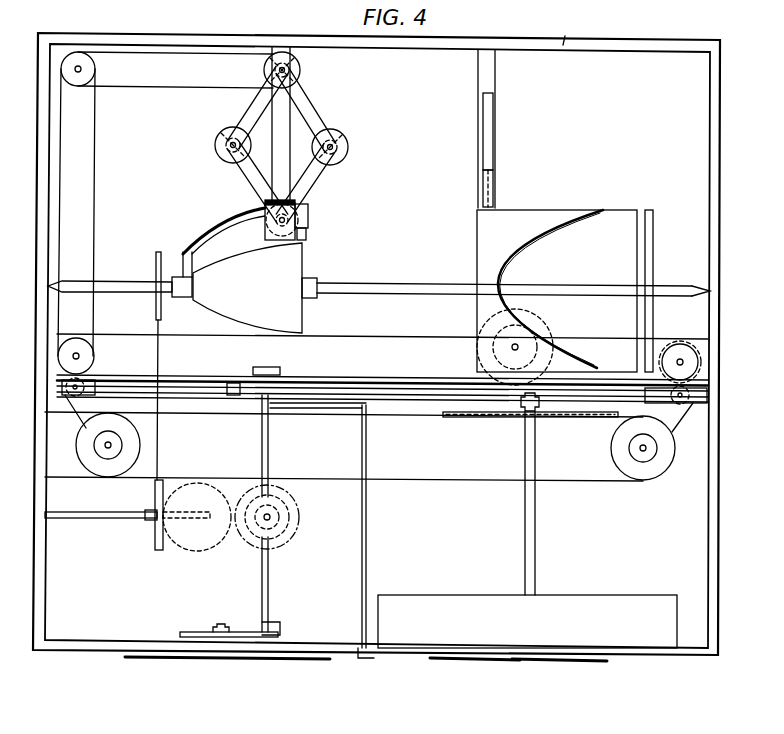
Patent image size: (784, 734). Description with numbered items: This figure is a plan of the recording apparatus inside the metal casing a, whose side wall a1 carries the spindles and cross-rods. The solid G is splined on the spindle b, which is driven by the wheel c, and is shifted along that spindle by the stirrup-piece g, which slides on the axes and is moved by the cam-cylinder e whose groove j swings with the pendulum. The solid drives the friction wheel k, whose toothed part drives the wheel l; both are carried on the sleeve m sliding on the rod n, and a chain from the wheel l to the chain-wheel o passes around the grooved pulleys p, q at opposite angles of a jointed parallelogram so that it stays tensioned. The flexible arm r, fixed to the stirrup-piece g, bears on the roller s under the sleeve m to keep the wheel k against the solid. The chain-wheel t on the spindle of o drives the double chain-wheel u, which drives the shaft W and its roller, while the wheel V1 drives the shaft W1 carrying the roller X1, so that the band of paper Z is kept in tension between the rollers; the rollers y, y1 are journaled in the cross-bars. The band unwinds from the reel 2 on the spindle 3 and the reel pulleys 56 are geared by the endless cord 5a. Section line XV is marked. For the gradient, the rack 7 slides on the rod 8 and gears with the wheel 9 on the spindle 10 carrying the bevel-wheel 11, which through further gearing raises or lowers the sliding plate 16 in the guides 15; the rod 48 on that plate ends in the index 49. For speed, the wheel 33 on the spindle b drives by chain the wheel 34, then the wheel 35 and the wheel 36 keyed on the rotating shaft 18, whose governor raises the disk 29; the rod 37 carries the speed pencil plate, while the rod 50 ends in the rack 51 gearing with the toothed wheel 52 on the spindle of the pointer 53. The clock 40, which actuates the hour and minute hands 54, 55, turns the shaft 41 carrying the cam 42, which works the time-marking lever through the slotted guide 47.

The metal casing a is at (44, 186).
The frame side a1 is at (559, 30).
The double chain-wheel u is at (96, 69).
The chain-wheel o is at (296, 68).
The chain-wheel t is at (298, 76).
The rod n is at (290, 148).
The grooved pulley q is at (216, 145).
The grooved pulley p is at (348, 147).
The sleeve m is at (268, 203).
The friction wheel k is at (308, 212).
The roller s is at (306, 236).
The flexible arm r is at (213, 241).
The wheel 33 is at (157, 355).
The toothed wheel l is at (262, 244).
The stirrup-piece g is at (182, 296).
The spindle b is at (398, 283).
The rod or way 8 is at (489, 82).
The rack 7 is at (497, 150).
The cam-cylinder e is at (557, 291).
The groove j is at (540, 234).
The wheel c is at (653, 228).
The spindle 10 is at (515, 347).
The bevel-wheel 11 is at (538, 326).
The wheel 9 is at (492, 352).
The section line XV is at (86, 328).
The roller X1 is at (705, 318).
The shaft W is at (94, 356).
The shaft W1 is at (699, 362).
The wheel V1 is at (693, 344).
The band of paper Z is at (184, 378).
The roller y is at (60, 390).
The roller y1 is at (708, 405).
The vertical guides 15 is at (240, 378).
The vertically-sliding plate 16 is at (252, 402).
The rod 37 is at (268, 456).
The wheel 36 is at (292, 497).
The rotating shaft 18 is at (270, 517).
The disk 29 is at (256, 540).
The wheel 34 is at (160, 480).
The wheel 35 is at (200, 550).
The belt pulleys 56 is at (88, 462).
The cam 42 is at (476, 418).
The slotted guide 47 is at (538, 410).
The reel 2 is at (612, 455).
The spindle 3 is at (646, 448).
The shaft 41 is at (534, 538).
The rod 48 is at (366, 505).
The endless cord 5a is at (433, 483).
The rod 50 is at (269, 582).
The rack 51 is at (281, 633).
The toothed wheel 52 is at (196, 631).
The clock 40 is at (527, 621).
The pointer 53 is at (294, 660).
The hour hand 54 is at (465, 661).
The minute hand 55 is at (565, 662).
The index 49 is at (360, 662).